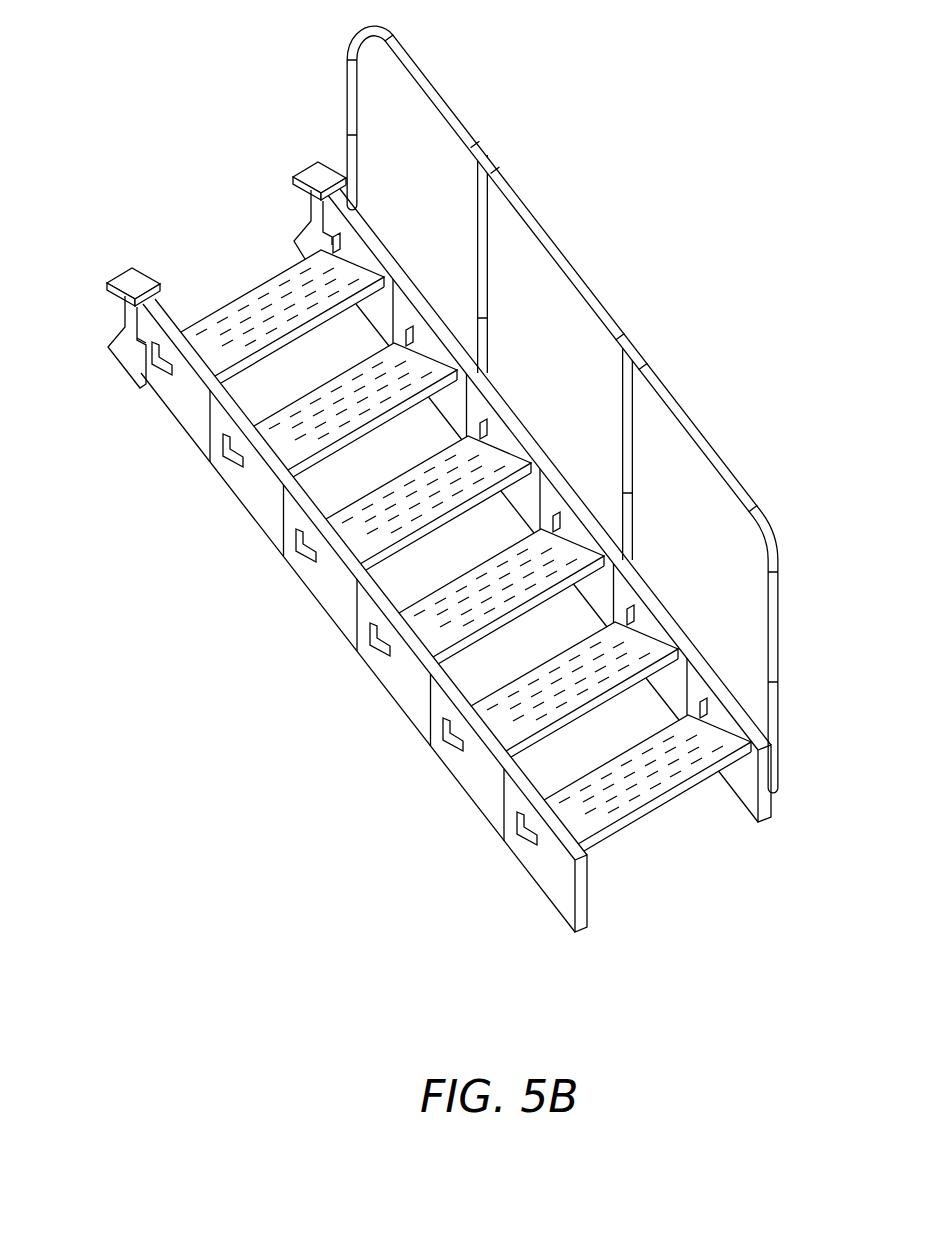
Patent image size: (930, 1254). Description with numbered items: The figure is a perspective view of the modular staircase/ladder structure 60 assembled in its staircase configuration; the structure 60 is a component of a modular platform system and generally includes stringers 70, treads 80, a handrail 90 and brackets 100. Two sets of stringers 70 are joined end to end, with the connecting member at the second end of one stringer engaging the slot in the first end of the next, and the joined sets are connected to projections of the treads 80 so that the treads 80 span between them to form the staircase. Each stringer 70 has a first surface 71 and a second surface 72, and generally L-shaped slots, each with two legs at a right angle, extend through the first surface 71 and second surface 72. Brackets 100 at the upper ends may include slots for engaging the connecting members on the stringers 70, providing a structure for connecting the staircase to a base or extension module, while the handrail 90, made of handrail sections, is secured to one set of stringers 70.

The modular staircase/ladder structure 60 is at (422, 495).
The stringer 70 is at (480, 407).
The first surface 71 is at (337, 606).
The second surface 72 is at (407, 317).
The tread 80 is at (247, 299).
The handrail 90 is at (746, 463).
The bracket 100 is at (133, 352).